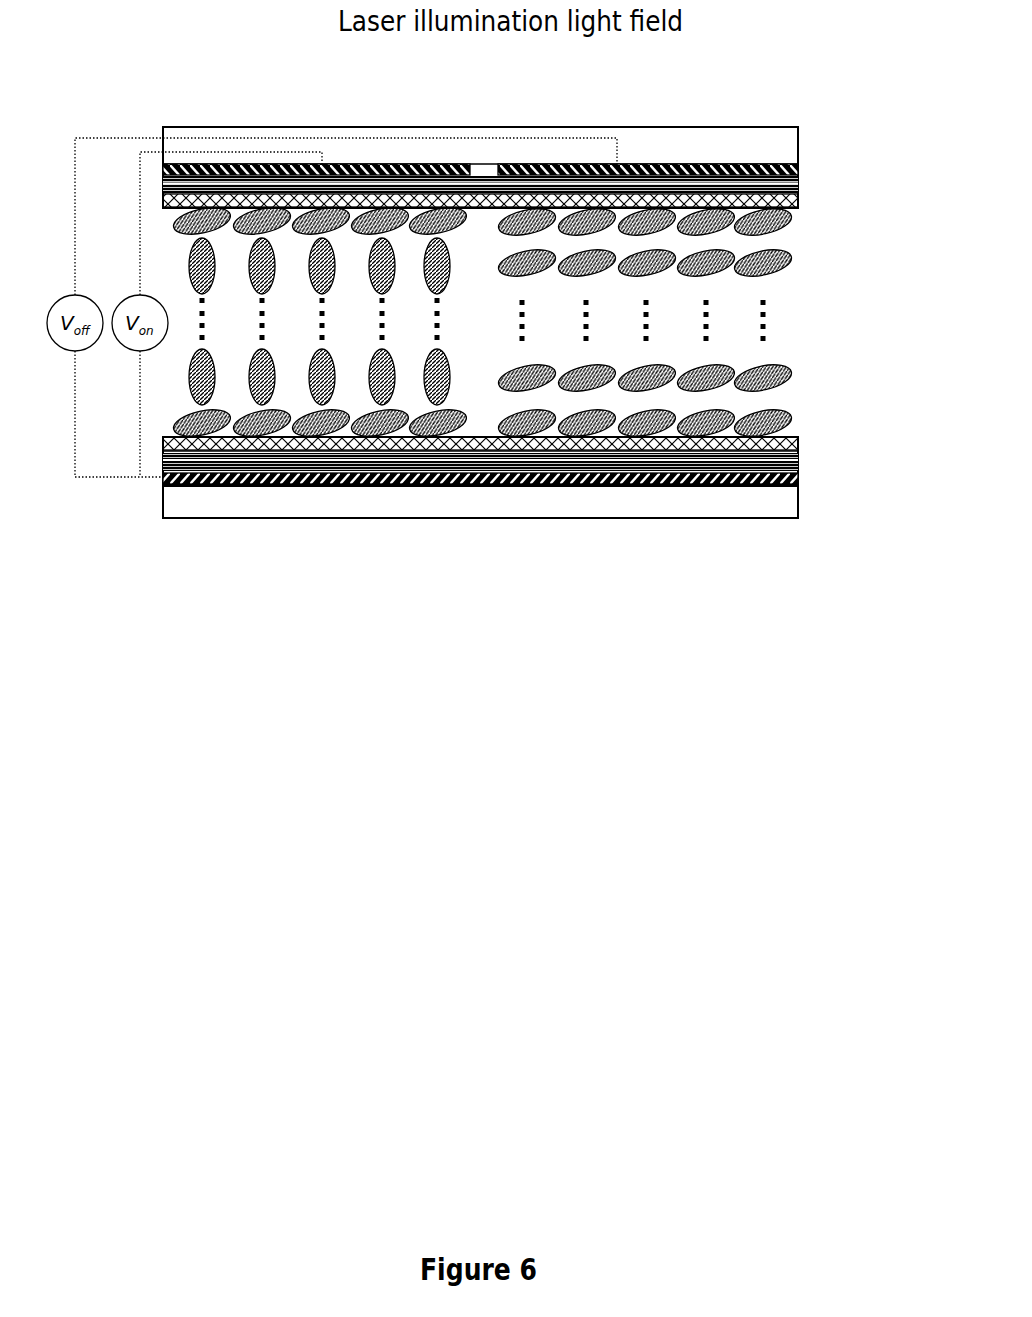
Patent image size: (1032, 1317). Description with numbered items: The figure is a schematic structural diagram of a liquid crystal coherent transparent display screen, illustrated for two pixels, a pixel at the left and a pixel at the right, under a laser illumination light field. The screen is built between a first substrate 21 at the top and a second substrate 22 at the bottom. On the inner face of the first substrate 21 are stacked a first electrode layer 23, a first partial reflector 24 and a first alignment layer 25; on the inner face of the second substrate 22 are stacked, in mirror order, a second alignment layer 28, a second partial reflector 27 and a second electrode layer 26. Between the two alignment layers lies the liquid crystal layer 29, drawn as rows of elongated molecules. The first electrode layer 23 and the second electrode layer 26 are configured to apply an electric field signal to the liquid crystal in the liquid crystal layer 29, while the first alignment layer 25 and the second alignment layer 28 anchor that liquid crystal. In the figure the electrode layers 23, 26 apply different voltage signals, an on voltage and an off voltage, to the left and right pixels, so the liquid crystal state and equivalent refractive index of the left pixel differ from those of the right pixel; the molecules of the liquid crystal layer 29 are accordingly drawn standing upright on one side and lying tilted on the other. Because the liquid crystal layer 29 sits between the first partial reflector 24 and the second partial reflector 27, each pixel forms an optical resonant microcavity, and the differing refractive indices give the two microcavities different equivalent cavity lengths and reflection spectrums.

The first substrate 21 is at (806, 113).
The second substrate 22 is at (808, 533).
The first electrode layer 23 is at (812, 162).
The first partial reflector 24 is at (813, 184).
The first alignment layer 25 is at (812, 208).
The second electrode layer 26 is at (813, 485).
The second partial reflector 27 is at (814, 460).
The second alignment layer 28 is at (813, 432).
The liquid crystal layer 29 is at (798, 281).